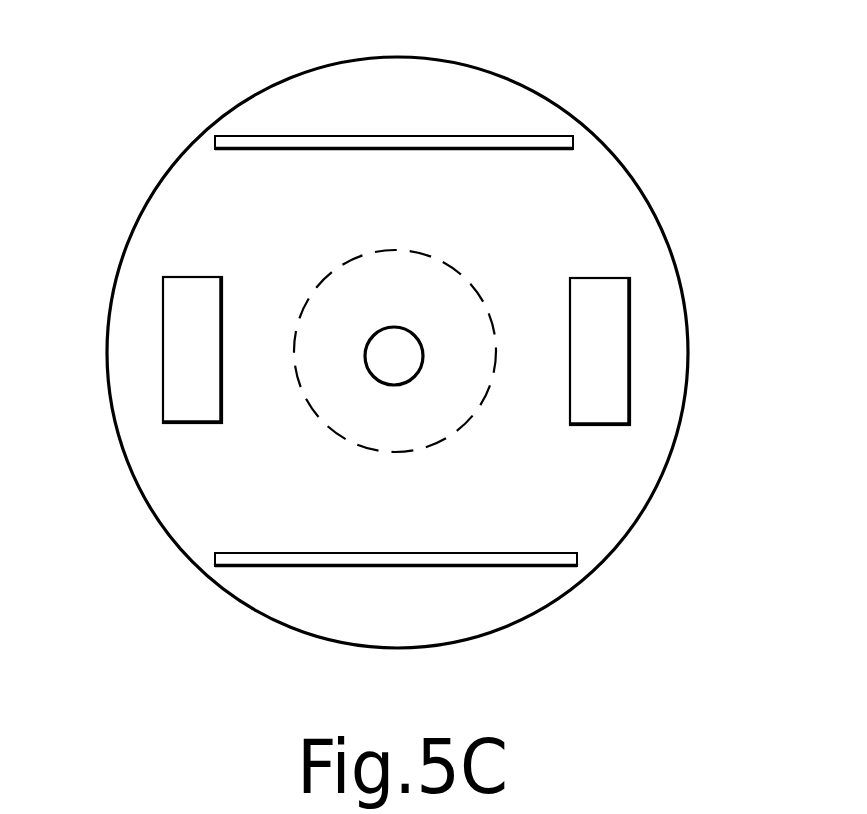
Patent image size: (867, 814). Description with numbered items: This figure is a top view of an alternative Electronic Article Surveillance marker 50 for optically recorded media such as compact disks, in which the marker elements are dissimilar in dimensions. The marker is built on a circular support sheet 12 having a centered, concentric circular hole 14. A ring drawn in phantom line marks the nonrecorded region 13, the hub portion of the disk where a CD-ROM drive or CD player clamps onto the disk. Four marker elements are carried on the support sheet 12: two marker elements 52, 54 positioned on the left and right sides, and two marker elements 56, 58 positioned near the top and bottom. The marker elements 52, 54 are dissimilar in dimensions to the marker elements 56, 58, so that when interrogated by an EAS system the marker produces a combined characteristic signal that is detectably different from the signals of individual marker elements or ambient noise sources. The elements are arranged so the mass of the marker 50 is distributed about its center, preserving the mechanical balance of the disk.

The marker 50 is at (401, 359).
The support sheet 12 is at (660, 220).
The nonrecorded region 13 is at (400, 248).
The circular hole 14 is at (370, 366).
The marker element 52 is at (185, 340).
The marker element 54 is at (612, 382).
The marker element 56 is at (497, 136).
The marker element 58 is at (313, 567).